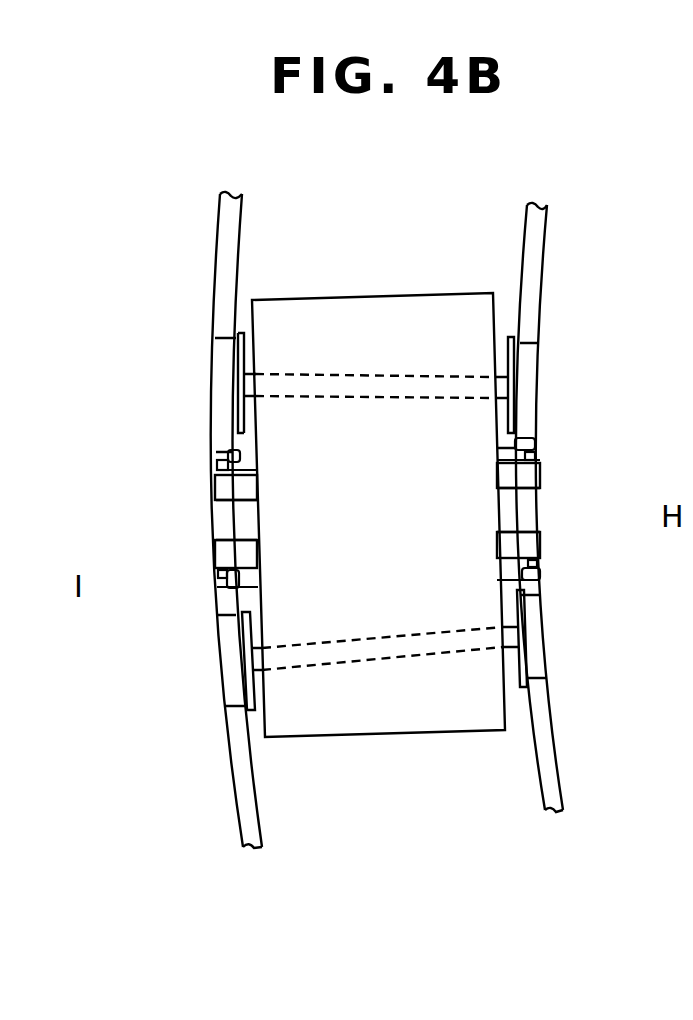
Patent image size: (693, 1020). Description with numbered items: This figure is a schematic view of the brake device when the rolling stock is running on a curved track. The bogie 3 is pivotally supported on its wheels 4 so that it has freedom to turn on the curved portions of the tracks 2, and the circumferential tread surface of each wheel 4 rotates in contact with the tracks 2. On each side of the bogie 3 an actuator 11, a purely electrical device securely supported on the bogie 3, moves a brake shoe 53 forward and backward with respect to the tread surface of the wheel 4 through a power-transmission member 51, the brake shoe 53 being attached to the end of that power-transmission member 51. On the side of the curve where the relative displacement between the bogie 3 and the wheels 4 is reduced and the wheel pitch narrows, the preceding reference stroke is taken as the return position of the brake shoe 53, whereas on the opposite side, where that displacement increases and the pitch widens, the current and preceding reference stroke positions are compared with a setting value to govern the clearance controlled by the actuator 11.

The tracks 2 is at (257, 828).
The bogie 3 is at (407, 708).
The wheels 4 is at (223, 358).
The actuator 11 is at (206, 487).
The power-transmission member 51 is at (230, 466).
The brake shoe 53 is at (236, 452).